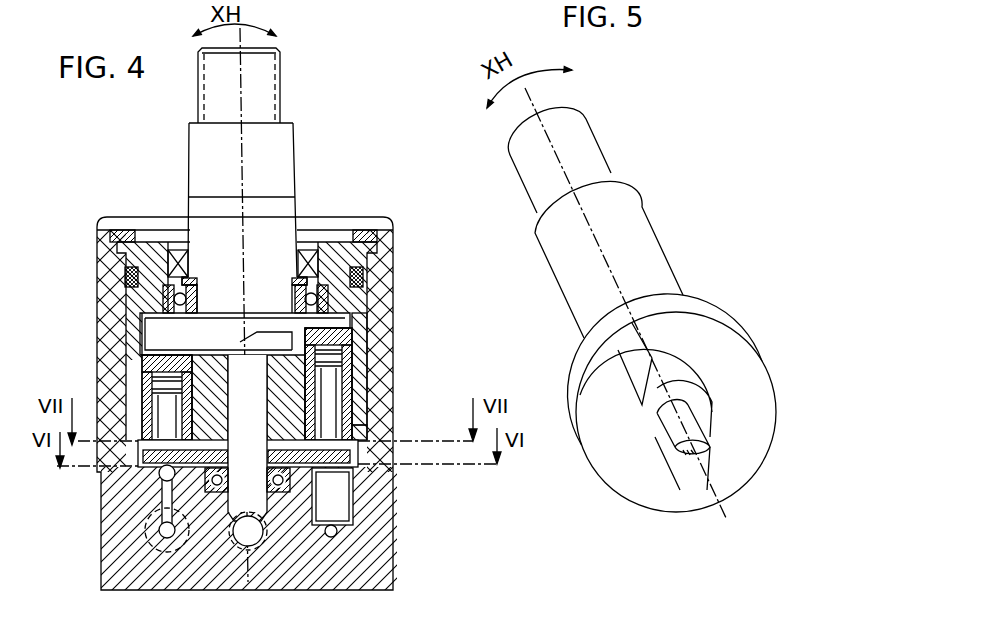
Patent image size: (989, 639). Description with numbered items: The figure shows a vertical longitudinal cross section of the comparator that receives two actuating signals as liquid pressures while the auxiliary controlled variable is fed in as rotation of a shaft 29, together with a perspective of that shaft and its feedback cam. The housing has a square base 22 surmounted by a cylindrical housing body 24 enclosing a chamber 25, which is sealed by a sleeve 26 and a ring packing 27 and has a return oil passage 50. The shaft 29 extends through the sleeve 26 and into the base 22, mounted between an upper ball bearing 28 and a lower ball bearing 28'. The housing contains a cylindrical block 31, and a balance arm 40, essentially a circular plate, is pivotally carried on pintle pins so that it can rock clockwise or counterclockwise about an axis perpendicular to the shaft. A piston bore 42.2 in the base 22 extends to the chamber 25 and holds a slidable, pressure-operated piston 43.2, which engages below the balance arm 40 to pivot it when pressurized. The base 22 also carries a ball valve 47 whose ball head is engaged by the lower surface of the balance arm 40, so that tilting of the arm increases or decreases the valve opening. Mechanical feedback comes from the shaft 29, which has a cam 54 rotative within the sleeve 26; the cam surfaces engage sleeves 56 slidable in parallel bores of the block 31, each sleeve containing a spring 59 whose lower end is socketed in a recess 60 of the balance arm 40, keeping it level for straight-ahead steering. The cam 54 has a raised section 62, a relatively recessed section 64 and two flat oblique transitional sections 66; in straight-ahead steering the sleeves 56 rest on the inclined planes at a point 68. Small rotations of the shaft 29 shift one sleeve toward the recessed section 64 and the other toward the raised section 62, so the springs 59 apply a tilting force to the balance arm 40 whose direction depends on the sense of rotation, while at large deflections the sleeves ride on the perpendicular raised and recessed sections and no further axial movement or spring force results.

In FIG. 4, the square base 22 is at (218, 407).
In FIG. 4, the cylindrical housing body 24 is at (214, 351).
In FIG. 4, the chamber 25 is at (297, 432).
In FIG. 4, the sleeve 26 is at (273, 220).
In FIG. 4, the ring packing 27 is at (85, 233).
In FIG. 4, the ball bearing 28 is at (176, 228).
In FIG. 4, the ball bearing 28' is at (165, 550).
In FIG. 4, the shaft 29 is at (222, 178).
In FIG. 5, the shaft 29 is at (652, 195).
In FIG. 4, the cylindrical block 31 is at (404, 369).
In FIG. 4, the balance arm 40 is at (384, 499).
In FIG. 4, the piston bore 42.2 is at (399, 516).
In FIG. 4, the piston 43.2 is at (404, 557).
In FIG. 4, the ball valve 47 is at (114, 508).
In FIG. 4, the return oil passage 50 is at (342, 490).
In FIG. 4, the cam 54 is at (192, 317).
In FIG. 5, the cam 54 is at (685, 348).
In FIG. 4, the sleeves 56 is at (245, 355).
In FIG. 4, the spring 59 is at (245, 372).
In FIG. 4, the recesses 60 is at (404, 403).
In FIG. 5, the raised section 62 is at (629, 458).
In FIG. 5, the recessed section 64 is at (693, 423).
In FIG. 5, the transitional sections 66 is at (697, 477).
In FIG. 5, the engagement point 68 is at (637, 348).